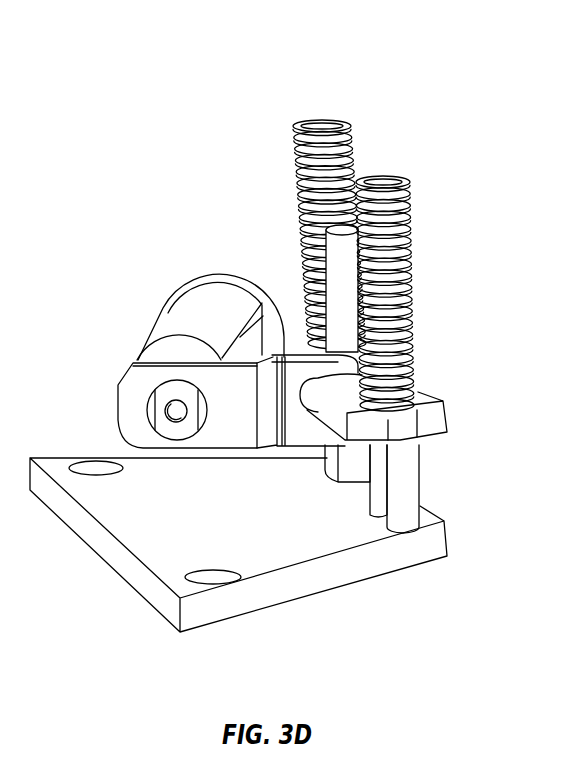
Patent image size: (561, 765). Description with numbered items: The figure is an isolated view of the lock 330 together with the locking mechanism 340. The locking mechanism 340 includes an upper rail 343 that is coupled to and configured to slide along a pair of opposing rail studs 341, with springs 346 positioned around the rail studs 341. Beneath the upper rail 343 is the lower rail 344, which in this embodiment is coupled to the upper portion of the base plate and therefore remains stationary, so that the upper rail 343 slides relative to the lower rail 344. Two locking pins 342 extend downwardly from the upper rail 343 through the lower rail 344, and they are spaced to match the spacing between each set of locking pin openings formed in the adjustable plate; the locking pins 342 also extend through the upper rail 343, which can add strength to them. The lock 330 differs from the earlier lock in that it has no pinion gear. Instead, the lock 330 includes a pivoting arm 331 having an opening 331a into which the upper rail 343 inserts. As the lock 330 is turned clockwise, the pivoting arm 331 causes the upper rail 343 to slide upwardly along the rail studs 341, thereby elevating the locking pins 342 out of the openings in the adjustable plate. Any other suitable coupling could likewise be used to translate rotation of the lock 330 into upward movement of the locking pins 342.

The locking mechanism 340 is at (270, 360).
The lock 330 is at (186, 322).
The pivoting arm 331 is at (238, 378).
The opening 331a is at (313, 377).
The springs 346 is at (340, 113).
The upper rail 343 is at (430, 403).
The rail studs 341 is at (330, 462).
The locking pins 342 is at (380, 503).
The lower rail 344 is at (300, 590).